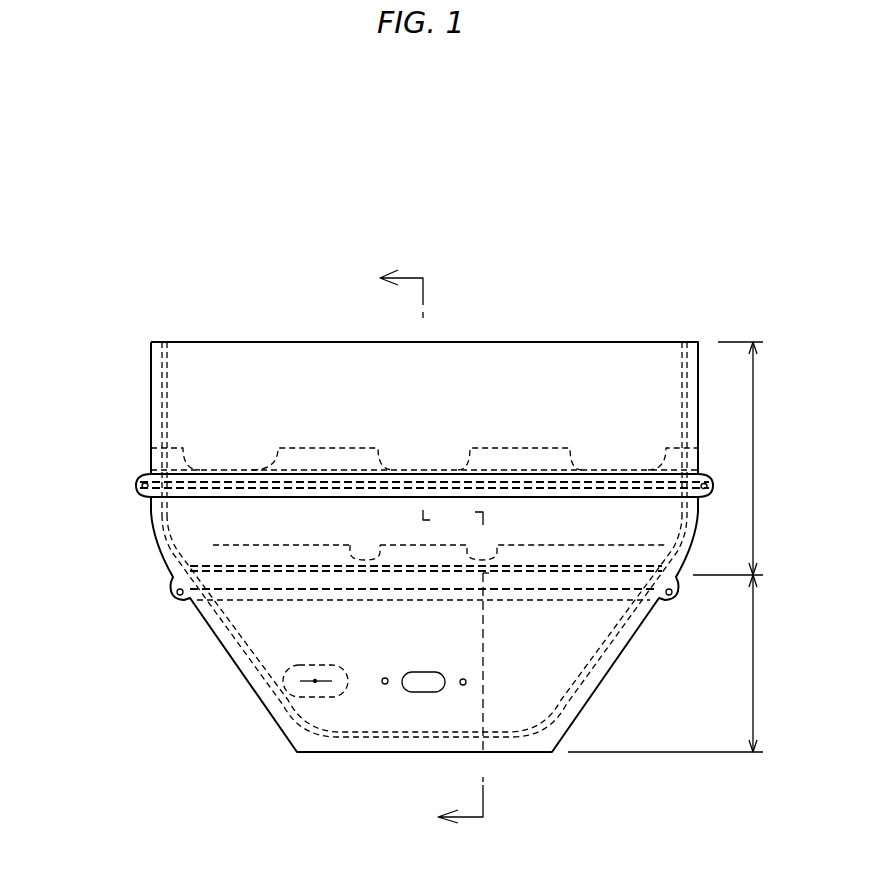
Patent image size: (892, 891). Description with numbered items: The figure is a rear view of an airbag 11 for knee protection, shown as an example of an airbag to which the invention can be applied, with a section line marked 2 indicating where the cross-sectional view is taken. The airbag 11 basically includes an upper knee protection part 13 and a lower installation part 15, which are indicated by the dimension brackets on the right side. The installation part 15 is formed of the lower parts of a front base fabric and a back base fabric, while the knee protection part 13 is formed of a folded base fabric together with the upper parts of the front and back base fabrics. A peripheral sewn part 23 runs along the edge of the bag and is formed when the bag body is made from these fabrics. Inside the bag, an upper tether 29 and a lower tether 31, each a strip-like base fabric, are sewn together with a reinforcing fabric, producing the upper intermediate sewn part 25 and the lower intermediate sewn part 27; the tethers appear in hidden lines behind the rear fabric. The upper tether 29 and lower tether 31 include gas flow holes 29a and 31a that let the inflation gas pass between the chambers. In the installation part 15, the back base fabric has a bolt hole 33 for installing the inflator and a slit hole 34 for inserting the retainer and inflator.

The airbag 11 is at (441, 118).
The knee protection part 13 is at (741, 458).
The installation part 15 is at (679, 663).
The peripheral sewn part 23 is at (690, 377).
The upper intermediate sewn part 25 is at (207, 490).
The lower intermediate sewn part 27 is at (265, 573).
The upper tether 29 is at (173, 448).
The gas flow hole 29a is at (248, 470).
The lower tether 31 is at (213, 545).
The gas flow hole 31a is at (363, 557).
The bolt hole 33 is at (420, 690).
The slit hole 34 is at (302, 693).
The section line 2- 2 is at (424, 548).